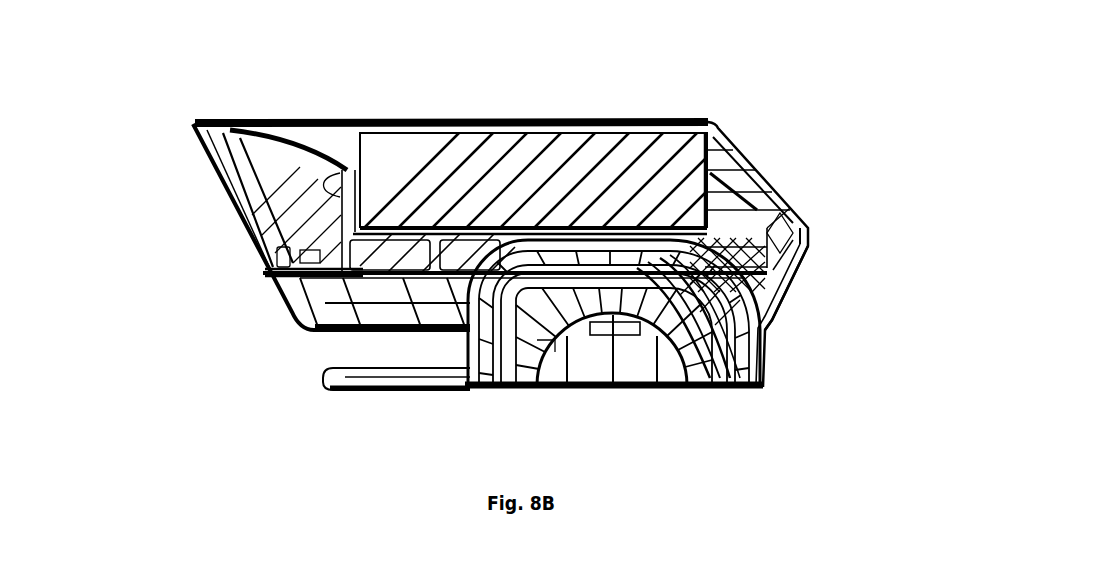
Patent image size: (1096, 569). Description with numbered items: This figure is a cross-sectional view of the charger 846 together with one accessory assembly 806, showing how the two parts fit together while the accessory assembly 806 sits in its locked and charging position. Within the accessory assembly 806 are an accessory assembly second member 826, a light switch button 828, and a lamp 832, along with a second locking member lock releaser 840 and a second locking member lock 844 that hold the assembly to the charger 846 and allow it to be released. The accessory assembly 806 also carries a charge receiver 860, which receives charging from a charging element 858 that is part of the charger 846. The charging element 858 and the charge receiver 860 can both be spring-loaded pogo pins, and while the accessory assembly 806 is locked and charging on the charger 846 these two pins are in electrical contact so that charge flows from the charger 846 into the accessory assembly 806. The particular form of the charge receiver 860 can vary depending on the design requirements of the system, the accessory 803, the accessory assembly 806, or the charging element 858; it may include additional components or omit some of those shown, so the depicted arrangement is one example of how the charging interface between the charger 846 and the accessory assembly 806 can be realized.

The accessory assembly 806 is at (150, 136).
The accessory 803 is at (538, 121).
The light switch button 828 is at (770, 176).
The lamp 832 is at (300, 184).
The accessory assembly second member 826 is at (325, 293).
The second locking member lock releaser 840 is at (420, 313).
The second locking member lock 844 is at (480, 391).
The charging element 858 is at (700, 392).
The charger 846 is at (797, 363).
The charge receiver 860 is at (770, 330).